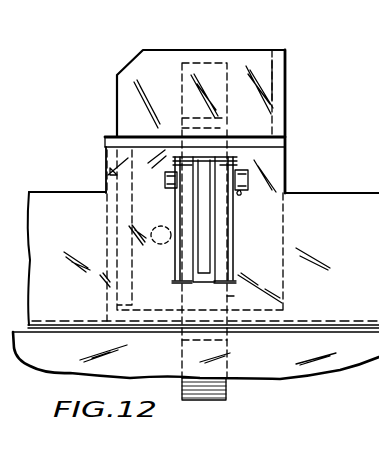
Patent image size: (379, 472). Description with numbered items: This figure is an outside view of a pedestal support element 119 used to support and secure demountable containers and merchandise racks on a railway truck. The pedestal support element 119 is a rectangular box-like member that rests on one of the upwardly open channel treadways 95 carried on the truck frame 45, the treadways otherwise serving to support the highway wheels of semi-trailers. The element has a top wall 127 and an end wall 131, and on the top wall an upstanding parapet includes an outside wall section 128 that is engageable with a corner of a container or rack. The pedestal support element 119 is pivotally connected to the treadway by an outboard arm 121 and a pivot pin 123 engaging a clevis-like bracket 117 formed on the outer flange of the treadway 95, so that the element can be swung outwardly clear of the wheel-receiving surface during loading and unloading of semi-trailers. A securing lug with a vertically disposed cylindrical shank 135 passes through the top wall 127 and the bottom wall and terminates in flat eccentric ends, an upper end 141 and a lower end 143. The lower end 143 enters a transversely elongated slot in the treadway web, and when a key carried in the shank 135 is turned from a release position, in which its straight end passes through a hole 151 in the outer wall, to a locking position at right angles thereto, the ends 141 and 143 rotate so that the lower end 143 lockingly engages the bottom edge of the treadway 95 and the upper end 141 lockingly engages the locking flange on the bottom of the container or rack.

The pedestal support element 119 is at (294, 78).
The upper eccentric end 141 is at (206, 61).
The outside wall section 128 is at (247, 61).
The top wall 127 is at (104, 140).
The end wall 131 is at (103, 173).
The treadway 95 is at (318, 204).
The clevis-like bracket 117 is at (175, 226).
The outboard arm 121 is at (212, 265).
The pivot pin 123 is at (250, 178).
The hole in outer wall 151 is at (162, 246).
The cylindrical shank 135 is at (256, 288).
The truck frame 45 is at (316, 370).
The lower eccentric end 143 is at (206, 400).